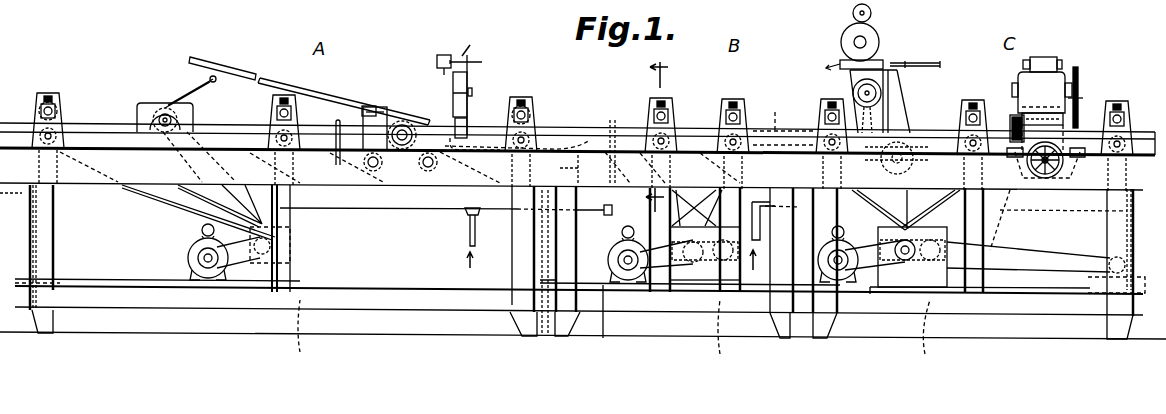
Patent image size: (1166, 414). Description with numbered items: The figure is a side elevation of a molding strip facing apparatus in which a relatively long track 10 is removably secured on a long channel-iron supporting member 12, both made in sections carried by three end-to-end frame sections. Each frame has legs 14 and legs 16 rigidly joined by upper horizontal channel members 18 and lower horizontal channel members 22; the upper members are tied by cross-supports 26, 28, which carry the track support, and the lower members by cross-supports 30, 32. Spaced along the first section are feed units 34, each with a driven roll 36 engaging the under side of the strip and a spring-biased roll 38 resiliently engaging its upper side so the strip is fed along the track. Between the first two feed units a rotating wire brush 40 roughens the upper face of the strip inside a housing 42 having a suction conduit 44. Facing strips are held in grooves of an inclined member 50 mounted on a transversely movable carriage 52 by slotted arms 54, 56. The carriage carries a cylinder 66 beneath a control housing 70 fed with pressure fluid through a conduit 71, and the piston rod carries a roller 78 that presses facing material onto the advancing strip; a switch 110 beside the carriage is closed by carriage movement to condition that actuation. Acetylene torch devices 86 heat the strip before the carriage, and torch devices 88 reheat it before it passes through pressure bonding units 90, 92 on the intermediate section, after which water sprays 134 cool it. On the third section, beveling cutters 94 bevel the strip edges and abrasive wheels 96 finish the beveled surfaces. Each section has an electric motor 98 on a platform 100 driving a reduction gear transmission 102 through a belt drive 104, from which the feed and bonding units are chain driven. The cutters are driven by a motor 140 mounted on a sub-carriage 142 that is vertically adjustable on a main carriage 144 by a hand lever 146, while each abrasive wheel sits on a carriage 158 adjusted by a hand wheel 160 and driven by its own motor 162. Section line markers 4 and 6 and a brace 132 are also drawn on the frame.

The section line 4- 4 is at (610, 260).
The section line 6- 6 is at (664, 136).
The track 10 is at (548, 120).
The supporting member 12 is at (572, 140).
The legs 14 is at (54, 216).
The legs 16 is at (513, 262).
The upper horizontal channel members 18 is at (162, 200).
The lower horizontal channel members 22 is at (172, 310).
The cross-supports 26 is at (581, 185).
The cross-supports 28 is at (276, 168).
The cross-supports 30 is at (30, 312).
The cross-supports 32 is at (616, 330).
The feed units 34 is at (34, 112).
The driven roll 36 is at (397, 170).
The spring-biased roll 38 is at (60, 100).
The rotating wire brush 40 is at (160, 110).
The housing 42 is at (137, 116).
The suction conduit 44 is at (198, 84).
The inclined member 50 is at (353, 90).
The carriage 52 is at (385, 118).
The slotted arm 54 is at (370, 106).
The slotted arm 56 is at (412, 125).
The cylinder 66 is at (472, 70).
The control housing 70 is at (443, 55).
The conduit 71 is at (478, 43).
The roller 78 is at (455, 120).
The acetylene torch devices 86 is at (345, 154).
The acetylene torch devices 88 is at (620, 178).
The pressure bonding unit 90 is at (648, 112).
The pressure bonding unit 92 is at (742, 106).
The beveling cutters 94 is at (886, 102).
The abrasive wheels 96 is at (1010, 130).
The electric motor 98 is at (188, 252).
The platform 100 is at (130, 279).
The reduction gear transmission 102 is at (300, 236).
The belt drive 104 is at (240, 282).
The switch 110 is at (462, 142).
The brace 132 is at (906, 210).
The water sprays 134 is at (783, 122).
The motor 140 is at (841, 33).
The sub-carriage 142 is at (832, 78).
The main carriage 144 is at (900, 120).
The hand lever 146 is at (912, 62).
The carriage 158 is at (1080, 106).
The hand wheel 160 is at (1055, 178).
The motor 162 is at (1048, 80).